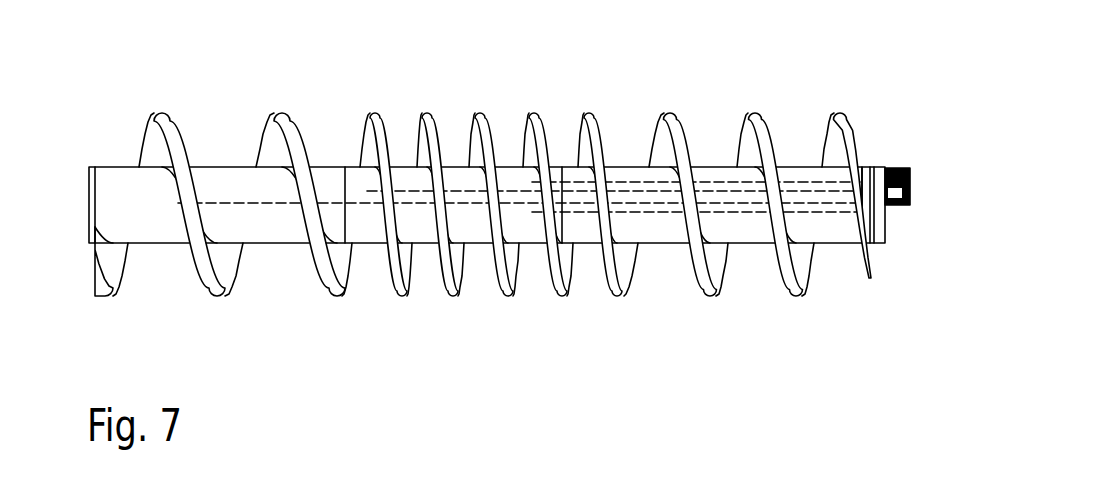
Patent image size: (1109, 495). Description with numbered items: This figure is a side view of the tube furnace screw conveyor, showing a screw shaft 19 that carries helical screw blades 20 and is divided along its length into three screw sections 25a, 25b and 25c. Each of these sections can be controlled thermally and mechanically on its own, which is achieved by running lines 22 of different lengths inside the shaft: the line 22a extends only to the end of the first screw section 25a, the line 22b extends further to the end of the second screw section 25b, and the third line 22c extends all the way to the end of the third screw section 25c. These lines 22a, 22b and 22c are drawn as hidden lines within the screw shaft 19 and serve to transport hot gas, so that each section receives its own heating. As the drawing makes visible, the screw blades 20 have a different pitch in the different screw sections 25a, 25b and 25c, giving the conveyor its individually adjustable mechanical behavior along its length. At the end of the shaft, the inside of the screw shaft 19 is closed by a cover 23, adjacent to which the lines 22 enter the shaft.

The screw shaft 19 is at (795, 165).
The screw blades 20 is at (800, 280).
The lines 22 is at (910, 184).
The line 22a is at (223, 202).
The line 22b is at (457, 190).
The third line 22c is at (710, 183).
The cover 23 is at (880, 225).
The screw section 25a is at (288, 272).
The screw section 25b is at (537, 270).
The third screw section 25c is at (668, 272).